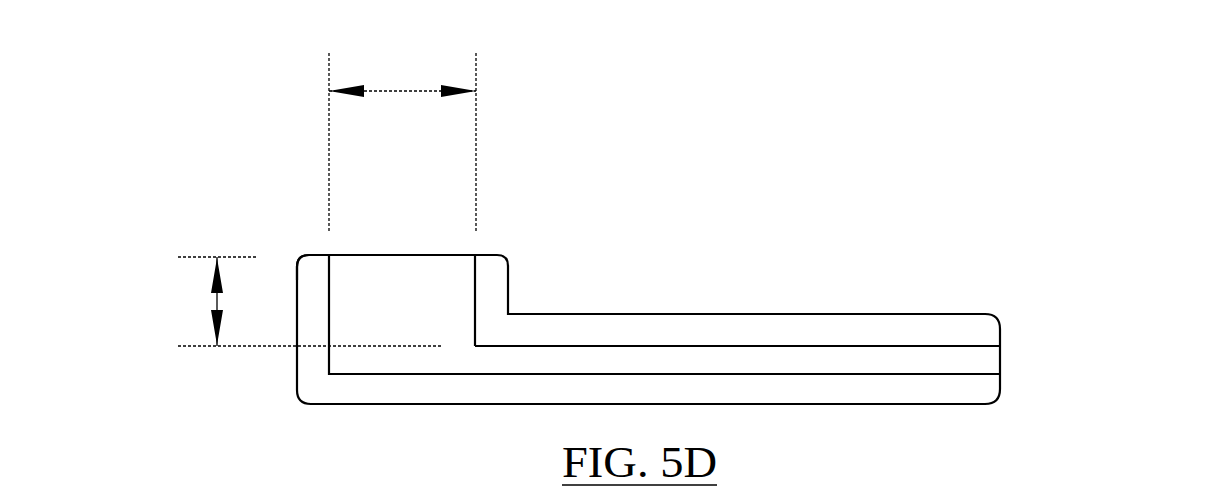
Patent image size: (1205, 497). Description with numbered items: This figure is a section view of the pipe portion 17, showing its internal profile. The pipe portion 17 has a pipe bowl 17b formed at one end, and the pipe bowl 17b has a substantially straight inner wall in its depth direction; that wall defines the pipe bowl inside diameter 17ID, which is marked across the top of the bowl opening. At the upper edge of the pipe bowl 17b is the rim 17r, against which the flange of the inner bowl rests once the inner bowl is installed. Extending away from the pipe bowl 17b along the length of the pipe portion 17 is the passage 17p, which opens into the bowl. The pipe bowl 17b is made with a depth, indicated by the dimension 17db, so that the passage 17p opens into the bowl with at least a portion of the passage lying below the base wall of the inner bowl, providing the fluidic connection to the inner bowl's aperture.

The pipe portion 17 is at (768, 313).
The rim 17r is at (310, 256).
The pipe bowl 17b is at (400, 278).
The passage 17p is at (980, 362).
The pipe bowl inside diameter 17ID is at (402, 141).
The depth dimension of bracket cavity 17db is at (286, 301).